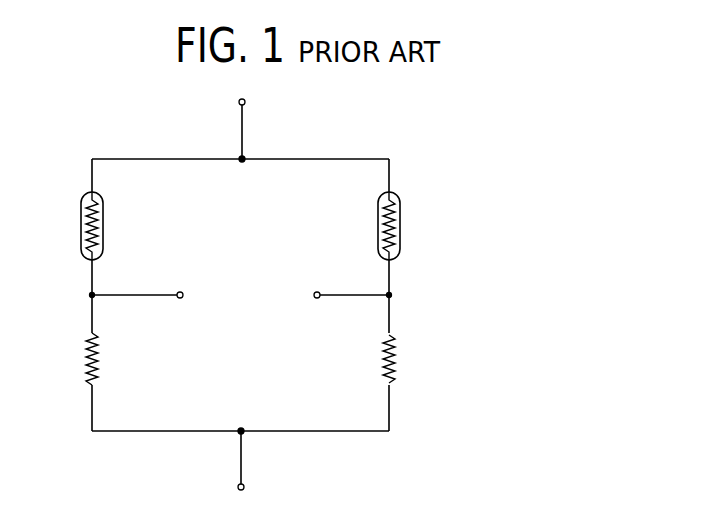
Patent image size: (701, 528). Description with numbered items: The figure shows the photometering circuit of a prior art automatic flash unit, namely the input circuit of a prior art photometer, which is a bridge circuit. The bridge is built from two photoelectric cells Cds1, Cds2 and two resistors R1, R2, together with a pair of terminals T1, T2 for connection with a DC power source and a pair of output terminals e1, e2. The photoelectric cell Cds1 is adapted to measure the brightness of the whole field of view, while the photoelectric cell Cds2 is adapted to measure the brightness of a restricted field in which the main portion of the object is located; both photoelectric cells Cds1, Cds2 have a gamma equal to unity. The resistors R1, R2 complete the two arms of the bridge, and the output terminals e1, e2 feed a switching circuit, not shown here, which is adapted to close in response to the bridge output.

The terminal T1 is at (255, 122).
The terminal T2 is at (256, 466).
The photoelectric cell Cds1 is at (104, 217).
The photoelectric cell Cds2 is at (378, 228).
The resistor R1 is at (99, 354).
The resistor R2 is at (382, 357).
The output terminal e1 is at (206, 301).
The output terminal e2 is at (286, 301).